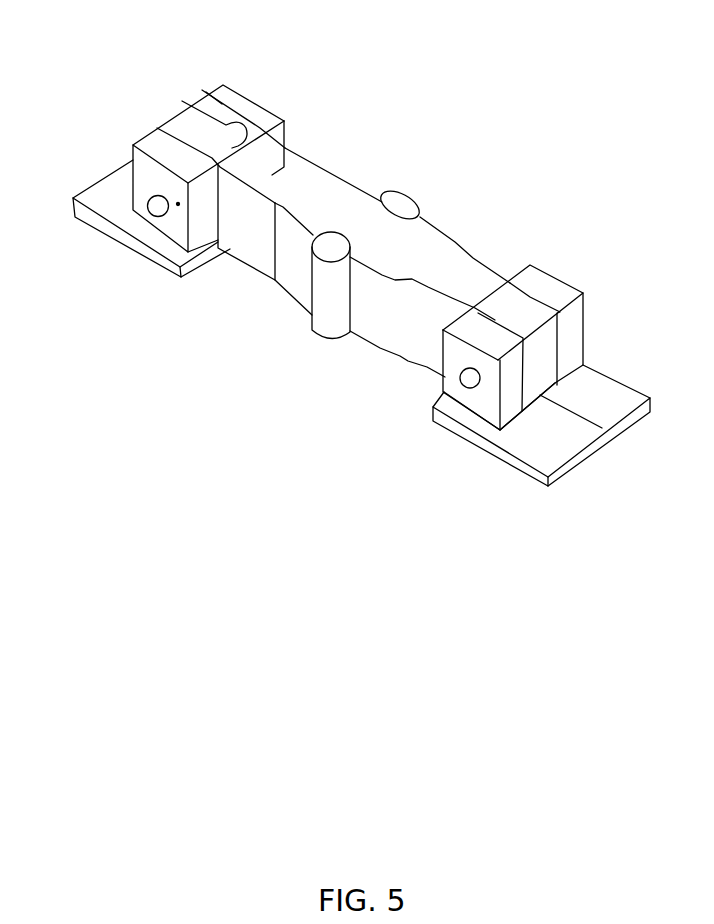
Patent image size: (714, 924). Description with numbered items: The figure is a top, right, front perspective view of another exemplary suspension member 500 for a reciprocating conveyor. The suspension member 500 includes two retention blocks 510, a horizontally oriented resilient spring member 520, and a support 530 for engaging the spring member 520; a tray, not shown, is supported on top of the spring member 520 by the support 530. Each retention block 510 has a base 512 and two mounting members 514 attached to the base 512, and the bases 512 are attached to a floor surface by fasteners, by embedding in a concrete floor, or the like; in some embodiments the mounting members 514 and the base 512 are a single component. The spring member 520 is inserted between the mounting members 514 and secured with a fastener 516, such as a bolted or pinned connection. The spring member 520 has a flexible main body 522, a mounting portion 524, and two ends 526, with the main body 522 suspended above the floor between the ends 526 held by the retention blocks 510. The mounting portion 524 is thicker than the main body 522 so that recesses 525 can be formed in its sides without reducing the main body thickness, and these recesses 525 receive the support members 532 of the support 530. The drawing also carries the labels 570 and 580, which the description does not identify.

The suspension member 500 is at (538, 143).
The retention block 510 is at (567, 254).
The clamp 570 is at (252, 80).
The base 512 is at (148, 263).
The mounting member 514 is at (210, 93).
The fastener 516 is at (152, 206).
The horizontally oriented resilient spring member 520 is at (276, 321).
The flexible main body 522 is at (453, 276).
The mounting portion 524 is at (340, 197).
The recess 525 is at (350, 238).
The end 526 is at (228, 113).
The support member 530 is at (322, 330).
The support member 532 is at (283, 168).
The protrusion 580 is at (404, 192).